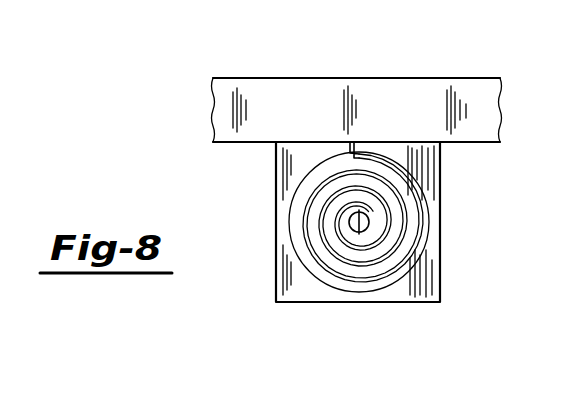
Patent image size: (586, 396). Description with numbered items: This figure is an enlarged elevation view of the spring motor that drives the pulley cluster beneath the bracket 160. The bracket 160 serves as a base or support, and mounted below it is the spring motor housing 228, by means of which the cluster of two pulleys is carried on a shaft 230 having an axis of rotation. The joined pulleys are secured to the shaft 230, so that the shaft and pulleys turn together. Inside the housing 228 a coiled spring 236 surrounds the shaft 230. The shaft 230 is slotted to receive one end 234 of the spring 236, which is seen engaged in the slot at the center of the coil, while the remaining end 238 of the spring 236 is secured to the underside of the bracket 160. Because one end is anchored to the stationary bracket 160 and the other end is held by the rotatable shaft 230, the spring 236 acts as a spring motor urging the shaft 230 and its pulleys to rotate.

The bracket 160 is at (430, 92).
The spring motor housing 228 is at (282, 286).
The shaft 230 is at (368, 221).
The end of spring 234 is at (352, 225).
The spring 236 is at (402, 258).
The remaining end of spring 238 is at (349, 147).